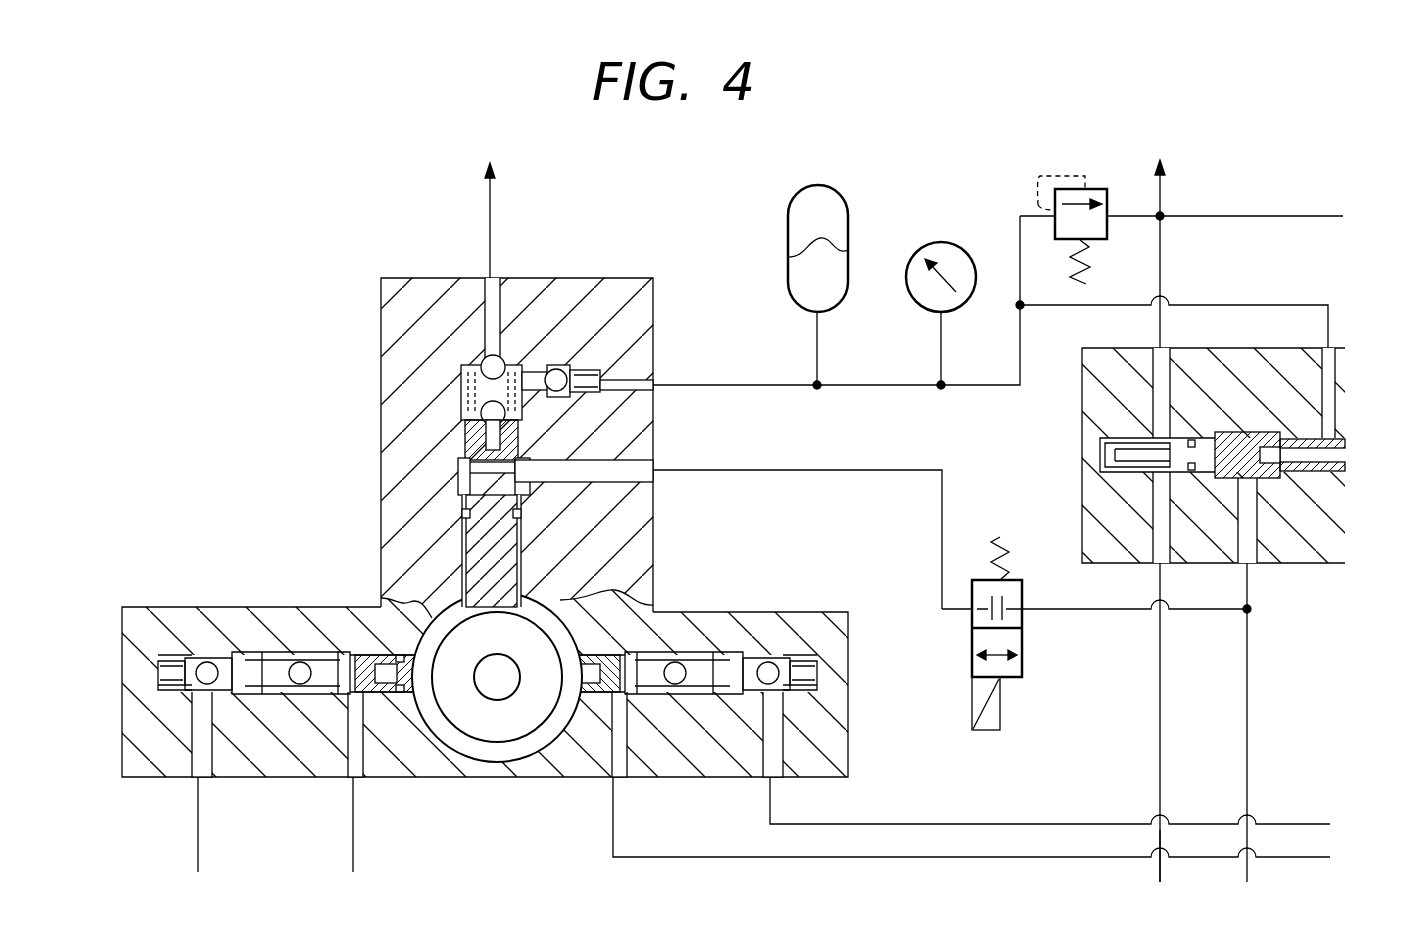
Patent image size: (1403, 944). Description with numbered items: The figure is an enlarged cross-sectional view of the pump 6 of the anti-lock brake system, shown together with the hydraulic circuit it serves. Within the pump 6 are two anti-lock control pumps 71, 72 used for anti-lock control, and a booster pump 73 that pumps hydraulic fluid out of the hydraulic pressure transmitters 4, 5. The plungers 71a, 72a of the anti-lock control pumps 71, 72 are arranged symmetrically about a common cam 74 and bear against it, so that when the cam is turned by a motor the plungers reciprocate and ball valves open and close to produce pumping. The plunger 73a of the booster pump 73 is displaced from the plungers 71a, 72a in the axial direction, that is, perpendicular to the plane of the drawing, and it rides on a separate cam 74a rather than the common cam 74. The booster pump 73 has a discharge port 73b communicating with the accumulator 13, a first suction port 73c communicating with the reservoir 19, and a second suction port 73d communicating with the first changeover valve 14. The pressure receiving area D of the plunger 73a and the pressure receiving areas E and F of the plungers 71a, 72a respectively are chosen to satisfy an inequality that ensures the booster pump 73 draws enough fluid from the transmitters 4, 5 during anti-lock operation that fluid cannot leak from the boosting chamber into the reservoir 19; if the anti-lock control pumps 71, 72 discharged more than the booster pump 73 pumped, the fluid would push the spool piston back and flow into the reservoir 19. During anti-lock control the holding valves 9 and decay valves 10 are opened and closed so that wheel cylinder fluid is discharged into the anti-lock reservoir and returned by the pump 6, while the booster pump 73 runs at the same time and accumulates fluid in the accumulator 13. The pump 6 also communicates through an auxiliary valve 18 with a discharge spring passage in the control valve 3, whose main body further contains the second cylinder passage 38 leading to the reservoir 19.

The control valve 3 is at (1070, 447).
The hydraulic pressure transmitter 4 is at (1155, 873).
The hydraulic pressure transmitter 5 is at (1245, 740).
The pump 6 is at (368, 318).
The holding valve 9 is at (771, 841).
The decay valve 10 is at (851, 841).
The accumulator 13 is at (848, 200).
The first changeover valve 14 is at (1024, 637).
The auxiliary valve 18 is at (1075, 189).
The reservoir 19 is at (826, 507).
The second cylinder passage 38 is at (1197, 216).
The anti-lock control pump 71 is at (306, 646).
The plunger 71a is at (393, 692).
The anti-lock control pump 72 is at (725, 646).
The plunger 72a is at (605, 660).
The booster pump 73 is at (448, 426).
The plunger 73a is at (464, 545).
The discharge port 73b is at (658, 382).
The first suction port 73c is at (496, 285).
The second suction port 73d is at (658, 470).
The common cam 74 is at (535, 722).
The cam 74a is at (482, 756).
The pressure receiving area D is at (456, 453).
The pressure receiving area E is at (312, 700).
The chamber F is at (658, 700).